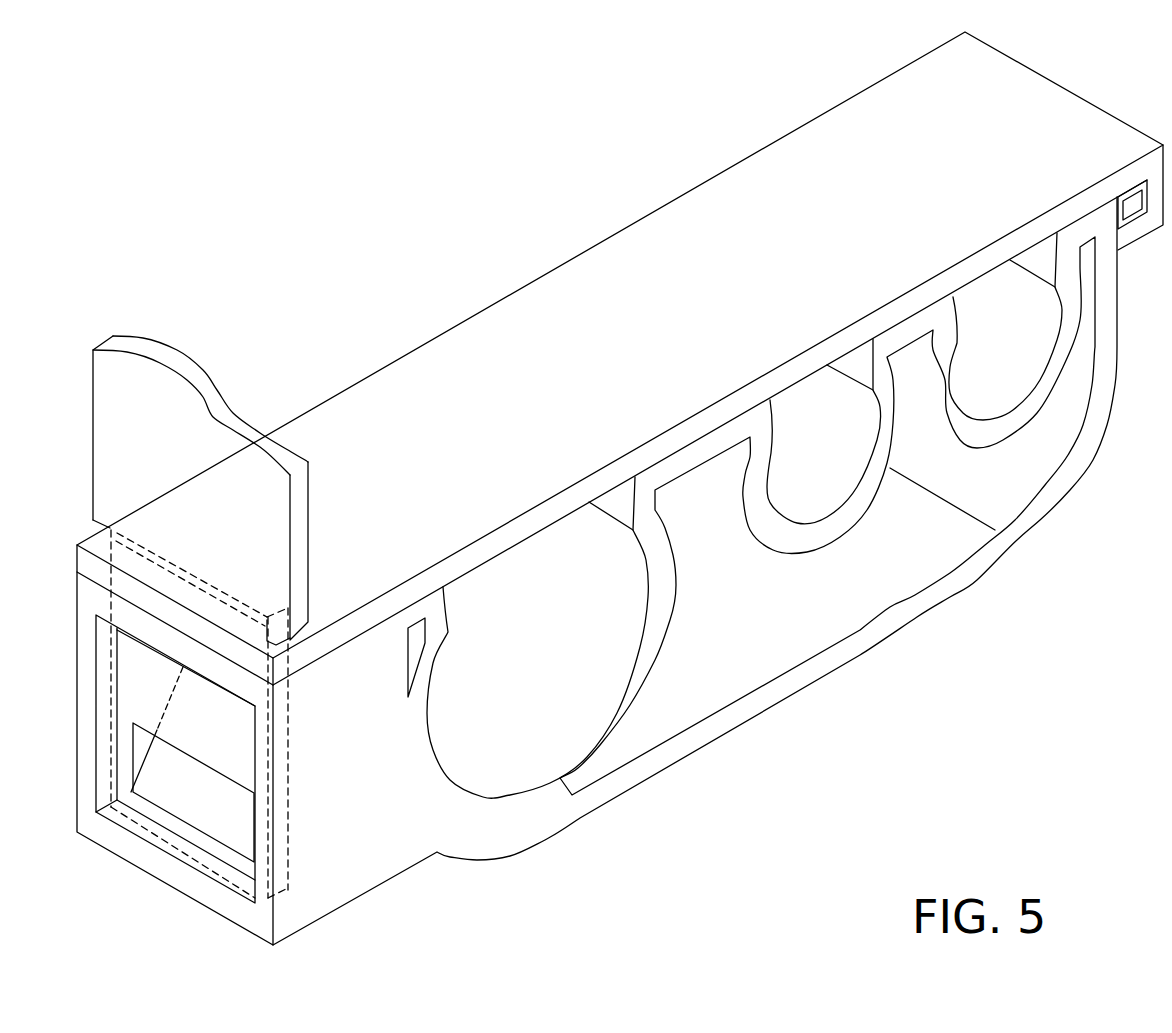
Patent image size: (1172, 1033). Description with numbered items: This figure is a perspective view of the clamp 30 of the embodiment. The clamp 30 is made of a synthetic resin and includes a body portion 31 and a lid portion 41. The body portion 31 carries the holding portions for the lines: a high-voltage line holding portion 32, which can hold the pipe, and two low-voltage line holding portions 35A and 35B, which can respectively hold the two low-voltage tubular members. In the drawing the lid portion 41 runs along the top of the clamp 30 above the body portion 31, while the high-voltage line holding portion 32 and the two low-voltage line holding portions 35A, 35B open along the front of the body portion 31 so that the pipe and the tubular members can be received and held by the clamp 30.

The clamp 30 is at (833, 832).
The body portion 31 is at (725, 758).
The lid portion 41 is at (683, 435).
The high-voltage line holding portion 32 is at (603, 733).
The low-voltage line holding portion 35A is at (1030, 407).
The low-voltage line holding portion 35B is at (855, 500).